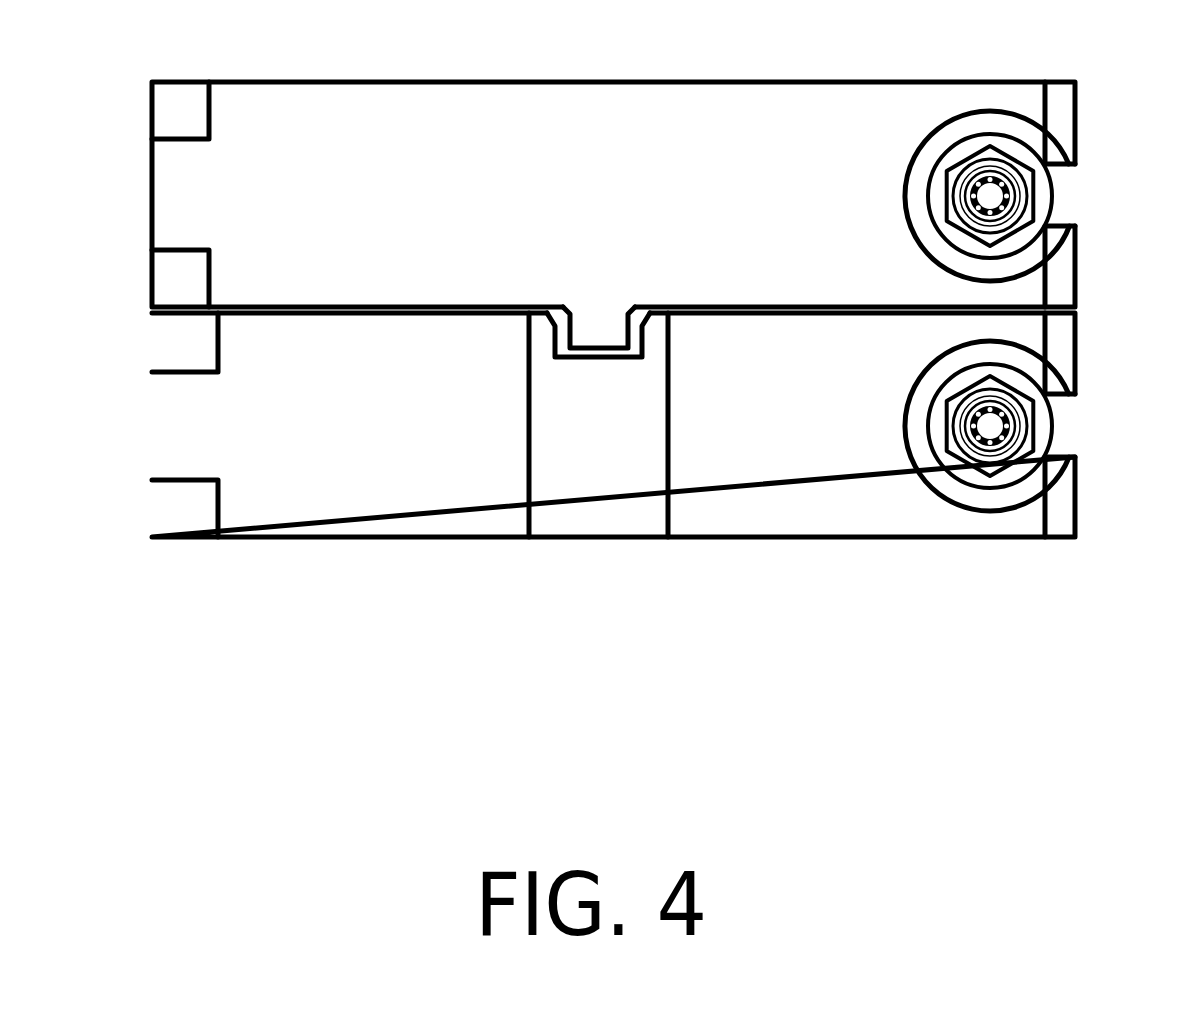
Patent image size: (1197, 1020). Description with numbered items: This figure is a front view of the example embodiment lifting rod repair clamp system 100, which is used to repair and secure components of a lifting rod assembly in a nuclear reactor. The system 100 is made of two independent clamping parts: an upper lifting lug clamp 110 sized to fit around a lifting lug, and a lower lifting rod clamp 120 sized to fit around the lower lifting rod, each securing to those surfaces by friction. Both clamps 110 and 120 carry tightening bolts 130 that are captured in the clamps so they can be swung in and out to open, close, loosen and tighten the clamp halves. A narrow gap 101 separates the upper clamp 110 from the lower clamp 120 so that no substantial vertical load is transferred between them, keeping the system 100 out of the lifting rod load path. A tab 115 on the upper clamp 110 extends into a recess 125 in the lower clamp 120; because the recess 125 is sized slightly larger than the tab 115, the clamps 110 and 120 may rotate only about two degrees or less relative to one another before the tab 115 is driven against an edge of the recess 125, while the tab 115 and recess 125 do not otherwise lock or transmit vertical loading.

The lifting rod repair clamp system 100 is at (132, 719).
The gap 101 is at (150, 304).
The upper lifting lug clamp 110 is at (820, 137).
The tab 115 is at (598, 318).
The lower lifting rod clamp 120 is at (351, 507).
The recess 125 is at (597, 352).
The tightening bolts 130 is at (1000, 194).